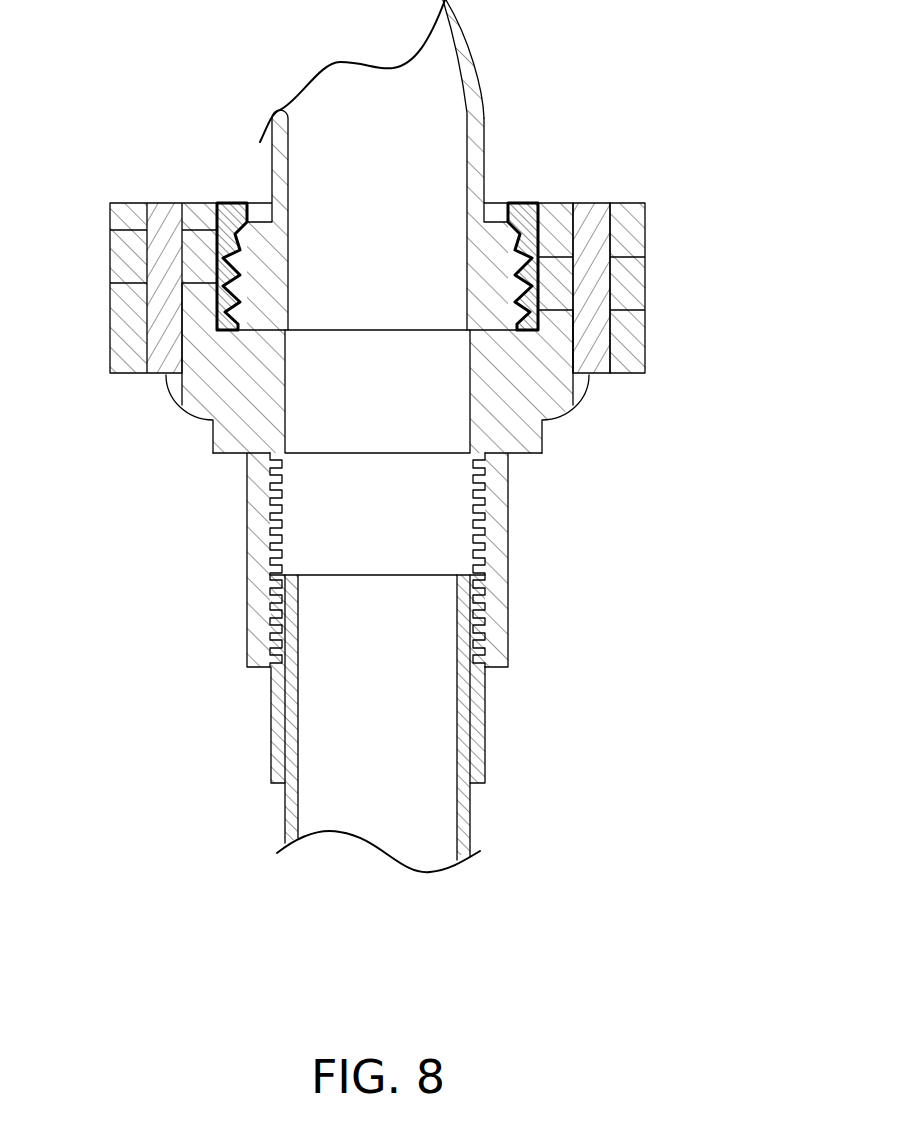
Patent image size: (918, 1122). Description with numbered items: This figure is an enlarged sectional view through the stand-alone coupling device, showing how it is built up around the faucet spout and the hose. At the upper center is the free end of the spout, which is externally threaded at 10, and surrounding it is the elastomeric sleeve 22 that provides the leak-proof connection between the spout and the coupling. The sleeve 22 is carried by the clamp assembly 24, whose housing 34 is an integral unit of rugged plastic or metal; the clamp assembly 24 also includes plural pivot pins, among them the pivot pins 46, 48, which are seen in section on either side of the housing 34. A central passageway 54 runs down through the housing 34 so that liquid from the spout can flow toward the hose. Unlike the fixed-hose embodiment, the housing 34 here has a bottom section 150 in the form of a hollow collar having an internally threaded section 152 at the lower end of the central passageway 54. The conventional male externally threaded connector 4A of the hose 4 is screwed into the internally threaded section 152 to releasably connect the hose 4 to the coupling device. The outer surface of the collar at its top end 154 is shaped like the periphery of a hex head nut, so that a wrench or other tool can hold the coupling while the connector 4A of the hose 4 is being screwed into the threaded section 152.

The hose 4 is at (470, 820).
The male externally threaded connector 4A is at (485, 738).
The external threads 10 is at (510, 275).
The elastomeric sleeve 22 is at (527, 190).
The clamp assembly 24 is at (653, 192).
The housing 34 is at (260, 418).
The pivot pin 46 is at (157, 203).
The pivot pin 48 is at (592, 213).
The central passageway 54 is at (470, 403).
The bottom section 150 is at (508, 565).
The internally threaded section 152 is at (473, 505).
The top end 154 is at (213, 430).